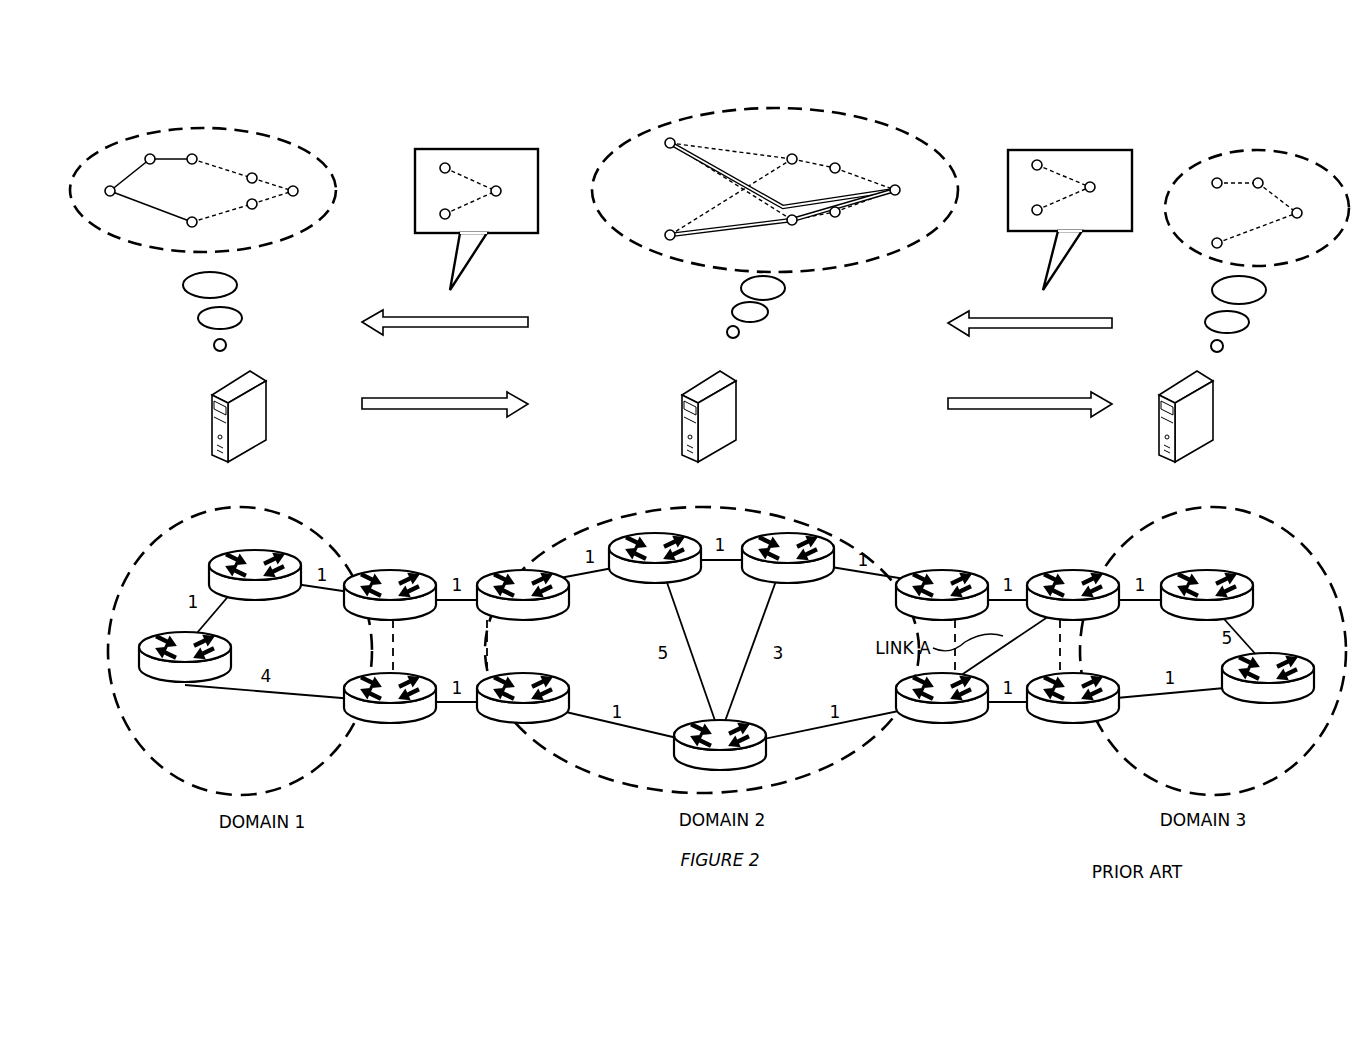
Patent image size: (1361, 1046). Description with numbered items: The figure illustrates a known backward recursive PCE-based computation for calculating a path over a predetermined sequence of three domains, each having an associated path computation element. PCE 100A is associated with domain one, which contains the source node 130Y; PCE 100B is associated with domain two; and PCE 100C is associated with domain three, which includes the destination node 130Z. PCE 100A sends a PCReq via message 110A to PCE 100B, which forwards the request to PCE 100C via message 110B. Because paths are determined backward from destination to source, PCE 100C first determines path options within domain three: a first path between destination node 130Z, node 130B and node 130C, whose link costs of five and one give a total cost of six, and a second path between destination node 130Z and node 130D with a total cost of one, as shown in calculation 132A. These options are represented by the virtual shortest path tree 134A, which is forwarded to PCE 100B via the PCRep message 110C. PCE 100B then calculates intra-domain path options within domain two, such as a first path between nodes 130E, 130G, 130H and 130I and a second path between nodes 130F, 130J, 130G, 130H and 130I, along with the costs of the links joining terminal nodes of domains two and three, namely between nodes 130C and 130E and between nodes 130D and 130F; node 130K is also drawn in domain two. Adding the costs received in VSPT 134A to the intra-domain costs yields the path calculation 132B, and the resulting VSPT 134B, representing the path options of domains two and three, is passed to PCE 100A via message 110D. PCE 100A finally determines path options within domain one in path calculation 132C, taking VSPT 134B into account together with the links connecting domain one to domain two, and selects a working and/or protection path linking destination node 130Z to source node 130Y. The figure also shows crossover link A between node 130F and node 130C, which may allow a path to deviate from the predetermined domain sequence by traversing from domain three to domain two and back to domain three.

The path calculation 132C is at (135, 130).
The virtual shortest path tree 134B is at (475, 148).
The message 110D is at (513, 316).
The path calculation 132B is at (902, 130).
The virtual shortest path tree 134A is at (1068, 148).
The calculation 132A is at (1258, 148).
The message 110C is at (997, 314).
The path computation element 100A is at (212, 420).
The message 110A is at (390, 412).
The path computation element 100B is at (738, 410).
The message 110B is at (975, 412).
The path computation element 100C is at (1216, 408).
The source node 130Y is at (180, 683).
The node 130I is at (515, 568).
The node 130K is at (508, 728).
The node 130H is at (640, 531).
The node 130G is at (808, 531).
The node 130J is at (690, 725).
The node 130E is at (952, 568).
The node 130C is at (1062, 568).
The node 130B is at (1215, 568).
The node 130F is at (945, 726).
The node 130D is at (1062, 726).
The destination node 130Z is at (1235, 705).